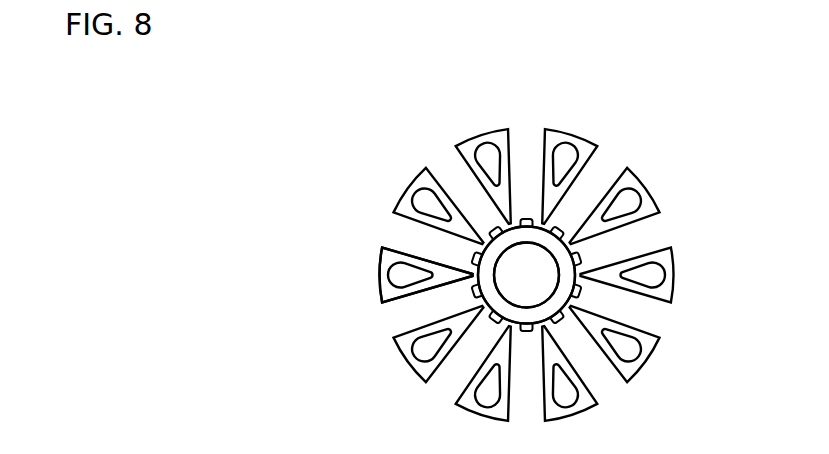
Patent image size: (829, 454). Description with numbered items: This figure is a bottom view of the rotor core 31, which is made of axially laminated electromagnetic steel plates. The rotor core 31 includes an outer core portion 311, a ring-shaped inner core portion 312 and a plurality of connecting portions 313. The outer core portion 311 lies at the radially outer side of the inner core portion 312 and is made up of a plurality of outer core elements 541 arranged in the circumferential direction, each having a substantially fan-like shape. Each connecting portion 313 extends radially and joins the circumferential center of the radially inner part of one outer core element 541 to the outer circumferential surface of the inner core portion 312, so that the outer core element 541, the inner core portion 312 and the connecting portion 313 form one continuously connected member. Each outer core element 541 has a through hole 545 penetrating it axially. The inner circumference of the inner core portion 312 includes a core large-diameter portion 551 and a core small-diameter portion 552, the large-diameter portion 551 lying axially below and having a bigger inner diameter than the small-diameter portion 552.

The rotor core 31 is at (472, 244).
The outer core portion 311 is at (369, 266).
The inner core portion 312 is at (477, 295).
The connecting portion 313 is at (471, 256).
The outer core element 541 is at (378, 282).
The through hole 545 is at (482, 155).
The core large-diameter portion 551 is at (563, 276).
The core small-diameter portion 552 is at (556, 266).